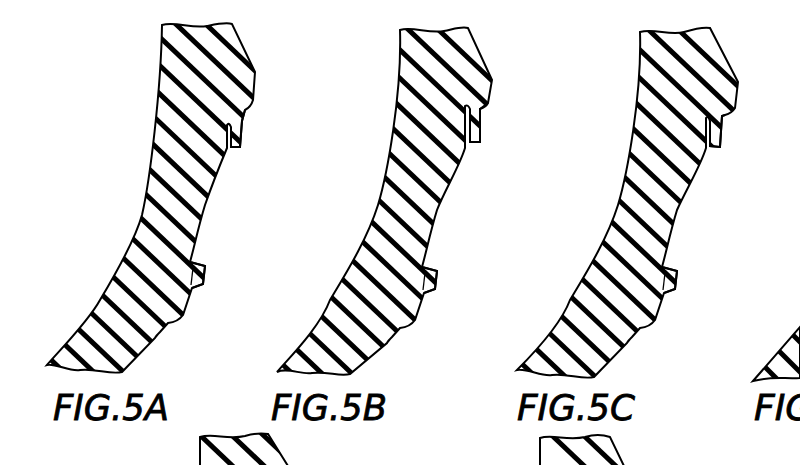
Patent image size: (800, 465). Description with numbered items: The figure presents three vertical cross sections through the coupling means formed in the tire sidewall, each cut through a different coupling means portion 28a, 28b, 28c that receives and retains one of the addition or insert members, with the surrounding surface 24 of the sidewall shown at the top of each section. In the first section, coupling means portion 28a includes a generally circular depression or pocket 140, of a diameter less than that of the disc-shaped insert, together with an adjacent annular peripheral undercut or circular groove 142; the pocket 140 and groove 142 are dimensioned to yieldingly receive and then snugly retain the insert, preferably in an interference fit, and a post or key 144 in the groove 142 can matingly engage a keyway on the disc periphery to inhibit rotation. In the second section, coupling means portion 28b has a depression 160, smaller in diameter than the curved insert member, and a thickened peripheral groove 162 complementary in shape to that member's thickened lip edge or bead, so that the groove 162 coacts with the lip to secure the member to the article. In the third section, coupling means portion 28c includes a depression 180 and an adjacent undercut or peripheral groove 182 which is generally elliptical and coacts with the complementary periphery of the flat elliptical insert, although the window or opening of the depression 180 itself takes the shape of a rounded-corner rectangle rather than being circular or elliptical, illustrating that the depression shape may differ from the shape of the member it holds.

In FIG. 5A, the surrounding surface 24 is at (199, 300).
In FIG. 5B, the surrounding surface 24 is at (430, 306).
In FIG. 5C, the surrounding surface 24 is at (676, 299).
In FIG. 5A, the coupling means portion 28a is at (199, 264).
In FIG. 5B, the coupling means portion 28b is at (437, 269).
In FIG. 5C, the coupling means portion 28c is at (679, 269).
In FIG. 5A, the pocket 140 is at (233, 144).
In FIG. 5A, the groove 142 is at (243, 126).
In FIG. 5A, the key 144 is at (205, 284).
In FIG. 5B, the depression 160 is at (470, 148).
In FIG. 5B, the groove 162 is at (482, 109).
In FIG. 5C, the depression 180 is at (712, 147).
In FIG. 5C, the groove 182 is at (726, 124).